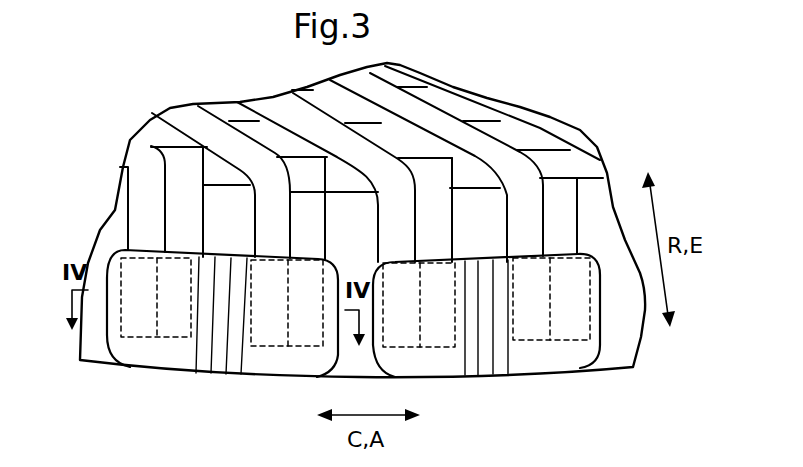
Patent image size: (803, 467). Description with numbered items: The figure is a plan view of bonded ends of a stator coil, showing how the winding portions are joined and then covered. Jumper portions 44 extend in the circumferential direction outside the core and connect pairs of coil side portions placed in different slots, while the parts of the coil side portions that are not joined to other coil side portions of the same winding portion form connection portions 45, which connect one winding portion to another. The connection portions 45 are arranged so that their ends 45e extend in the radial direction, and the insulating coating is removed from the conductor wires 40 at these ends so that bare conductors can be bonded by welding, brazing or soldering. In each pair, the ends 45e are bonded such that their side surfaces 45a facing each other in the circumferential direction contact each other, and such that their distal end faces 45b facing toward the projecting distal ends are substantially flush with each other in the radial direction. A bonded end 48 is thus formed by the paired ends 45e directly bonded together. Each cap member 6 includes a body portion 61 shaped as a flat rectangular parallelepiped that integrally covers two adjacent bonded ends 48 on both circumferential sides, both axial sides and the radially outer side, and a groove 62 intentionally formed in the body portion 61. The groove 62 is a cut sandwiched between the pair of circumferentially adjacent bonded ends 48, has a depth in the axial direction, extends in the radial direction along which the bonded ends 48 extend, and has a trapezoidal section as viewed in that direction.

The conductor wire 40 is at (127, 200).
The jumper portion 44 is at (523, 137).
The connection portion 45 is at (305, 190).
The side surface 45a is at (432, 300).
The distal end face 45b is at (535, 345).
The end 45e is at (307, 350).
The bonded end 48 is at (152, 343).
The cap member 6 is at (112, 248).
The body portion 61 is at (123, 347).
The groove 62 is at (223, 280).